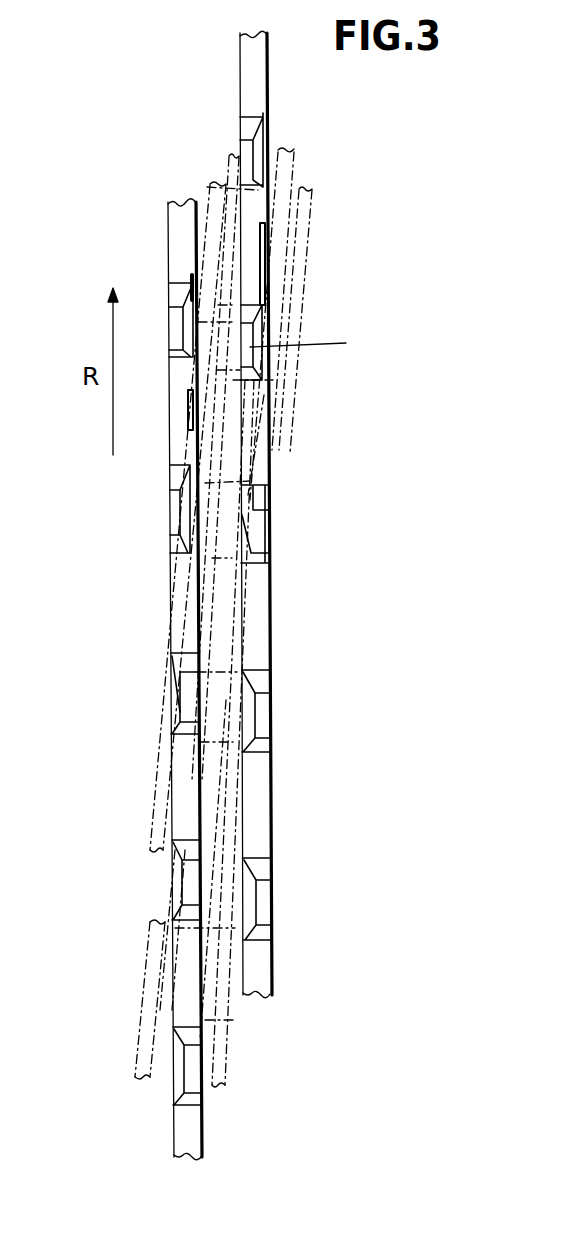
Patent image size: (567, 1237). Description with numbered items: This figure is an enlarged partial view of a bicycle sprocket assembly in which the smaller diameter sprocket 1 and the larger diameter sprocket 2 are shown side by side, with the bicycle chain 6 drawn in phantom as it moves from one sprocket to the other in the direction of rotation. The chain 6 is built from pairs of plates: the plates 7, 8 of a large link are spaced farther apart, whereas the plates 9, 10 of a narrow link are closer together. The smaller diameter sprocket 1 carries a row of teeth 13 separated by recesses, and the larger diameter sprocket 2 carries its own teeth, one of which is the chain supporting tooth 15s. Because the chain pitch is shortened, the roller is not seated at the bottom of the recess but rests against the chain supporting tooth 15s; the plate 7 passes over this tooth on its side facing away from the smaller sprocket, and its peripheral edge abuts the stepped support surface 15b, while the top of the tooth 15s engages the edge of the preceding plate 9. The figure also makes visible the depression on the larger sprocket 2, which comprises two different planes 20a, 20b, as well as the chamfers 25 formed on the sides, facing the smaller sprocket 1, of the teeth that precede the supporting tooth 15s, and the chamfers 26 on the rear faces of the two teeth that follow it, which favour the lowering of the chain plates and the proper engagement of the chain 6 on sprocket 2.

The smaller diameter sprocket 1 is at (276, 952).
The larger diameter sprocket 2 is at (176, 1137).
The bicycle chain 6 is at (312, 214).
The plate 7 is at (212, 190).
The plate 8 is at (302, 287).
The plate 9 is at (178, 515).
The plate 10 is at (275, 597).
The teeth 13 is at (268, 712).
The stepped support surface 15b is at (172, 661).
The chain supporting tooth 15s is at (165, 704).
The plane 20a is at (190, 296).
The plane 20b is at (190, 445).
The chamfers 25 is at (317, 344).
The chamfers 26 is at (178, 896).